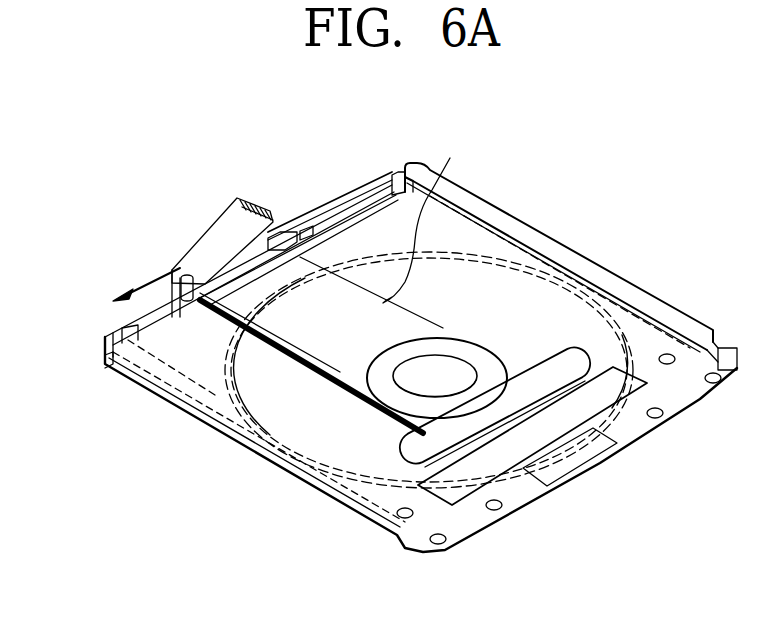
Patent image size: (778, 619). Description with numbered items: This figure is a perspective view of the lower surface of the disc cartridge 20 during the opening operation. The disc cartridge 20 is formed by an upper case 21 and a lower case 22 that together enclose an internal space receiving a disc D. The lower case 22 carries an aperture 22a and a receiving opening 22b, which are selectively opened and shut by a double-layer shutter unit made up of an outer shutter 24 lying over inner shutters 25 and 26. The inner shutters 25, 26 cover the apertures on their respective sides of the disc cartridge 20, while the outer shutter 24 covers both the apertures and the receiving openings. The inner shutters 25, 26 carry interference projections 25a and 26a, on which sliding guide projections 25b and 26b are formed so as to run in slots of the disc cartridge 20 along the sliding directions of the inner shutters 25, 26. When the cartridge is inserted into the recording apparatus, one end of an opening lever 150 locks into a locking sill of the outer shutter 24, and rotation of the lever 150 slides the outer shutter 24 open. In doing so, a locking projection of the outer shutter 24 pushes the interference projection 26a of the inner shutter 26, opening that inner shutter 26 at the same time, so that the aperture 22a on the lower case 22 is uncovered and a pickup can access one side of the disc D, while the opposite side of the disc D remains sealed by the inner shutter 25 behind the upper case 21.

The disc cartridge 20 is at (630, 173).
The upper case 21 is at (557, 247).
The lower case 22 is at (583, 273).
The aperture 22a is at (430, 220).
The receiving opening 22b is at (407, 420).
The outer shutter 24 is at (122, 312).
The inner shutter 25 is at (305, 225).
The interference projection 25a is at (283, 228).
The sliding guide projection 25b is at (300, 270).
The inner shutter 26 is at (167, 382).
The interference projection 26a is at (107, 357).
The sliding guide projection 26b is at (110, 328).
The opening lever 150 is at (207, 228).
The disc D is at (480, 270).